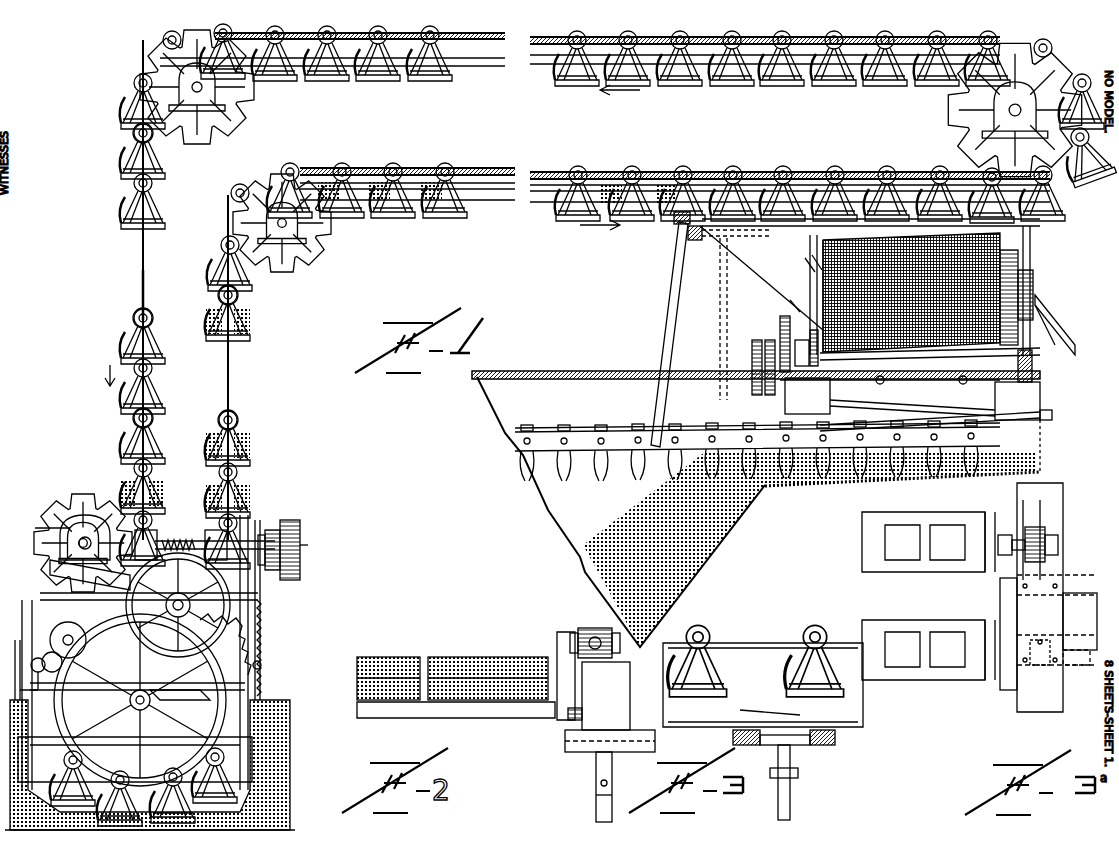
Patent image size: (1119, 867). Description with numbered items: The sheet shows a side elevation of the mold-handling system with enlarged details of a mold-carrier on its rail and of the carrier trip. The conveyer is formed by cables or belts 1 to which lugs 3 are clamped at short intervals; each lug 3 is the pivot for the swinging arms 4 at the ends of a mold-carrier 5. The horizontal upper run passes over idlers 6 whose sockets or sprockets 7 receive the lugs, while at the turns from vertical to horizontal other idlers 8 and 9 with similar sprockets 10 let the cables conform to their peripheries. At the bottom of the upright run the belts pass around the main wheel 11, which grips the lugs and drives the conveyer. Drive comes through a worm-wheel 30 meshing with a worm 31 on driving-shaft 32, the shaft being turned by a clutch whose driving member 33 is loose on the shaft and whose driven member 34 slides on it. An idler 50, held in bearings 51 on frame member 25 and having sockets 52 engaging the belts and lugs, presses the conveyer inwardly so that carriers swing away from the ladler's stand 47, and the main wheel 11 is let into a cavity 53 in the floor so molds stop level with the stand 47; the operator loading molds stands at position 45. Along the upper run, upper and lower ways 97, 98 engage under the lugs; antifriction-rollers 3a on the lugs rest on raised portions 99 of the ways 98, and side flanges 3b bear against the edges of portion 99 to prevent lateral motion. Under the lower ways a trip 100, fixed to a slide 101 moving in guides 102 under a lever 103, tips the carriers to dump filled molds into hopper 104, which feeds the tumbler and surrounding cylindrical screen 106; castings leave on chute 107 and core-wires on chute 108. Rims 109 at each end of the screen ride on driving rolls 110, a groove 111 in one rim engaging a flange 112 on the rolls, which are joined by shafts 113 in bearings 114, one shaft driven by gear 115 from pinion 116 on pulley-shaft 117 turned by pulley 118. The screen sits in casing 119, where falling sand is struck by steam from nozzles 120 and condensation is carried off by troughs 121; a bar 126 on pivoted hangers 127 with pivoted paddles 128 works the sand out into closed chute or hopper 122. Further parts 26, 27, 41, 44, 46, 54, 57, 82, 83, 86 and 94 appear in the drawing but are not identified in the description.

In FIG. 1, the cable or belt 1 is at (144, 290).
In FIG. 1, the lug 3 is at (330, 30).
In FIG. 2, the lug 3 is at (580, 632).
In FIG. 3, the lug 3 is at (822, 628).
In FIG. 3a, the lug 3 is at (1010, 530).
In FIG. 2, the antifriction-roller 3a is at (598, 626).
In FIG. 3a, the antifriction-roller 3a is at (1045, 530).
In FIG. 1, the side flange 3b is at (560, 38).
In FIG. 2, the side flange 3b is at (620, 648).
In FIG. 3a, the side flange 3b is at (1058, 540).
In FIG. 1, the swinging arm 4 is at (436, 50).
In FIG. 3, the swinging arm 4 is at (715, 656).
In FIG. 1, the mold-carrier 5 is at (752, 75).
In FIG. 1, the idler 6 is at (948, 110).
In FIG. 1, the socket or sprocket 7 is at (950, 125).
In FIG. 1, the idler 8 is at (330, 232).
In FIG. 1, the idler 9 is at (240, 105).
In FIG. 1, the sprocket 10 is at (225, 128).
In FIG. 1, the rotary member or wheel 11 is at (152, 700).
In FIG. 1, the frame member 25 is at (68, 565).
In FIG. 1, the pinion 26 is at (52, 652).
In FIG. 1, the gear 27 is at (66, 628).
In FIG. 1, the worm-wheel 30 is at (178, 613).
In FIG. 1, the worm 31 is at (190, 538).
In FIG. 1, the driving-shaft 32 is at (178, 534).
In FIG. 1, the clutch driving member 33 is at (292, 565).
In FIG. 1, the clutch driven member 34 is at (268, 530).
In FIG. 1, the bearing 41 is at (150, 535).
In FIG. 1, the frame rail 44 is at (258, 592).
In FIG. 1, the operator's position 45 is at (280, 702).
In FIG. 1, the brick block 46 is at (370, 182).
In FIG. 2, the brick block 46 is at (385, 660).
In FIG. 1, the ladler's stand 47 is at (20, 668).
In FIG. 1, the idler 50 is at (75, 495).
In FIG. 1, the bearing 51 is at (55, 528).
In FIG. 1, the sprocket or socket 52 is at (92, 520).
In FIG. 1, the cavity 53 is at (220, 775).
In FIG. 1, the slat 54 is at (595, 78).
In FIG. 1, the hook 57 is at (1056, 190).
In FIG. 1, the pinion 82 is at (35, 666).
In FIG. 1, the pivot 83 is at (262, 666).
In FIG. 1, the rack bar 86 is at (260, 622).
In FIG. 1, the rack 94 is at (262, 645).
In FIG. 1, the upper track or way 97 is at (490, 62).
In FIG. 1, the lower track or way 98 is at (490, 180).
In FIG. 1, the raised portion 99 is at (355, 40).
In FIG. 2, the raised portion 99 is at (593, 681).
In FIG. 3a, the raised portion 99 is at (1040, 589).
In FIG. 1, the trip 100 is at (702, 238).
In FIG. 2, the trip 100 is at (570, 722).
In FIG. 3, the trip 100 is at (740, 720).
In FIG. 3a, the trip 100 is at (1000, 586).
In FIG. 1, the slide 101 is at (740, 232).
In FIG. 2, the slide 101 is at (570, 740).
In FIG. 3, the slide 101 is at (795, 745).
In FIG. 3a, the slide 101 is at (1080, 610).
In FIG. 1, the guide 102 is at (745, 228).
In FIG. 2, the guide 102 is at (655, 735).
In FIG. 3, the guide 102 is at (835, 738).
In FIG. 3a, the guide 102 is at (1068, 580).
In FIG. 1, the lever 103 is at (727, 270).
In FIG. 2, the lever 103 is at (612, 798).
In FIG. 3, the lever 103 is at (792, 800).
In FIG. 3a, the lever 103 is at (1035, 640).
In FIG. 1, the hopper 104 is at (785, 285).
In FIG. 1, the cylindrical sieve or screen 106 is at (1010, 245).
In FIG. 1, the chute 107 is at (1040, 302).
In FIG. 1, the chute 108 is at (1040, 395).
In FIG. 1, the circular rim 109 is at (828, 252).
In FIG. 1, the driving wheel or roll 110 is at (1033, 357).
In FIG. 1, the groove 111 is at (804, 282).
In FIG. 1, the flange 112 is at (823, 355).
In FIG. 1, the shaft 113 is at (845, 340).
In FIG. 1, the bearing 114 is at (1050, 340).
In FIG. 1, the gear 115 is at (780, 325).
In FIG. 1, the pinion 116 is at (803, 358).
In FIG. 1, the pulley-shaft 117 is at (756, 367).
In FIG. 1, the pulley 118 is at (755, 395).
In FIG. 1, the casing or compartment 119 is at (1035, 375).
In FIG. 1, the steam nozzle 120 is at (890, 381).
In FIG. 1, the trough 121 is at (1048, 422).
In FIG. 1, the chute or hopper 122 is at (700, 565).
In FIG. 1, the bar 126 is at (608, 440).
In FIG. 1, the pivoted hanger 127 is at (675, 280).
In FIG. 1, the pivoted paddle 128 is at (585, 465).